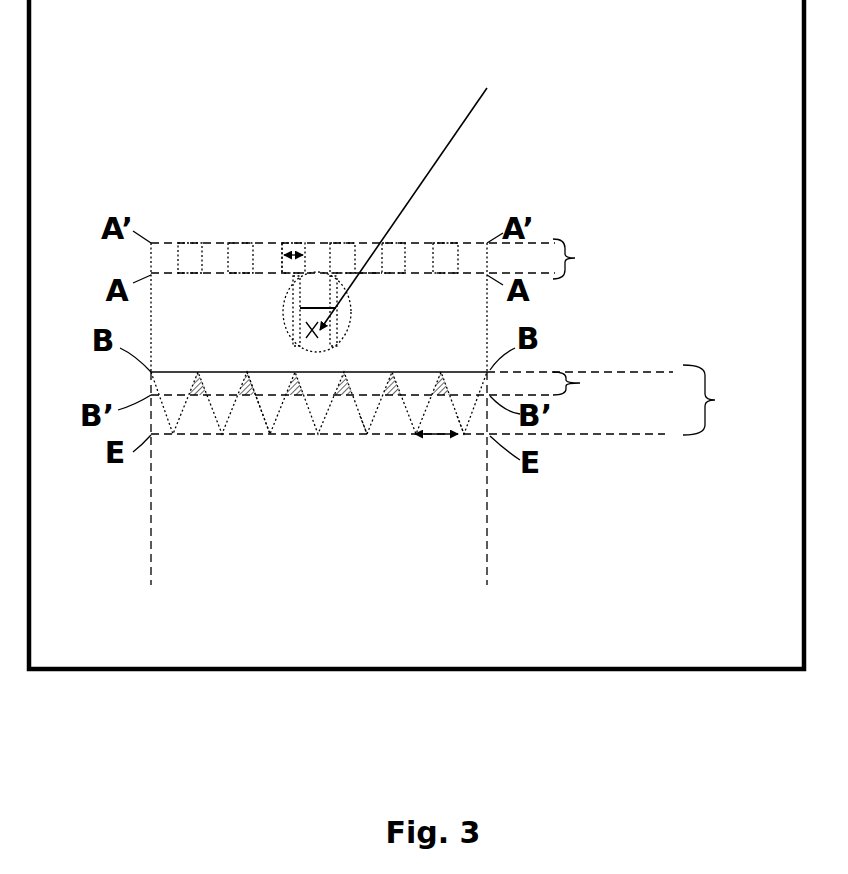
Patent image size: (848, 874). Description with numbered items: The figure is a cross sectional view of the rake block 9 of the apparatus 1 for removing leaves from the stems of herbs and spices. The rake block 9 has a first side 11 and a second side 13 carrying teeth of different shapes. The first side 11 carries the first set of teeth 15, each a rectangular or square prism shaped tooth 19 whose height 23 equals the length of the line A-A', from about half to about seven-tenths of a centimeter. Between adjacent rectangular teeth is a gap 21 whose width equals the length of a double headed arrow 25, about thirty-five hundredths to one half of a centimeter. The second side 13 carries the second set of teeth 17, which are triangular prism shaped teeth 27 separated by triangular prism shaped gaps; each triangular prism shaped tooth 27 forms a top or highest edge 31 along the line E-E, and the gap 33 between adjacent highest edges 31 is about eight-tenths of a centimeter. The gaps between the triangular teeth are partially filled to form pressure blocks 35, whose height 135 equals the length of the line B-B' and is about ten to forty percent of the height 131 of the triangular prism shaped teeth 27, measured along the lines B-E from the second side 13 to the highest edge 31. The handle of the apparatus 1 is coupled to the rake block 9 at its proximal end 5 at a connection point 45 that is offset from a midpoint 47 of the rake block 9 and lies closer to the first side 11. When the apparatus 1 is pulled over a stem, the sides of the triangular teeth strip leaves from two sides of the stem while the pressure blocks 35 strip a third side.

The apparatus 1 is at (378, 127).
The proximal end 5 is at (284, 320).
The rake block 9 is at (355, 208).
The first side 11 is at (398, 276).
The second side 13 is at (407, 372).
The first set of teeth 15 is at (167, 183).
The second set of teeth 17 is at (330, 447).
The rectangular or square prism shaped tooth 19 is at (213, 234).
The gap 21 is at (289, 275).
The height 23 is at (388, 262).
The double headed arrow 25 is at (293, 240).
The triangular prism shaped tooth 27 is at (270, 443).
The top or highest edge 31 is at (370, 445).
The gap 33 is at (433, 441).
The pressure block 35 is at (202, 392).
The connection point 45 is at (317, 312).
The midpoint 47 is at (424, 196).
The height of the triangular prism shaped teeth 131 is at (471, 475).
The height of the pressure blocks 135 is at (396, 385).